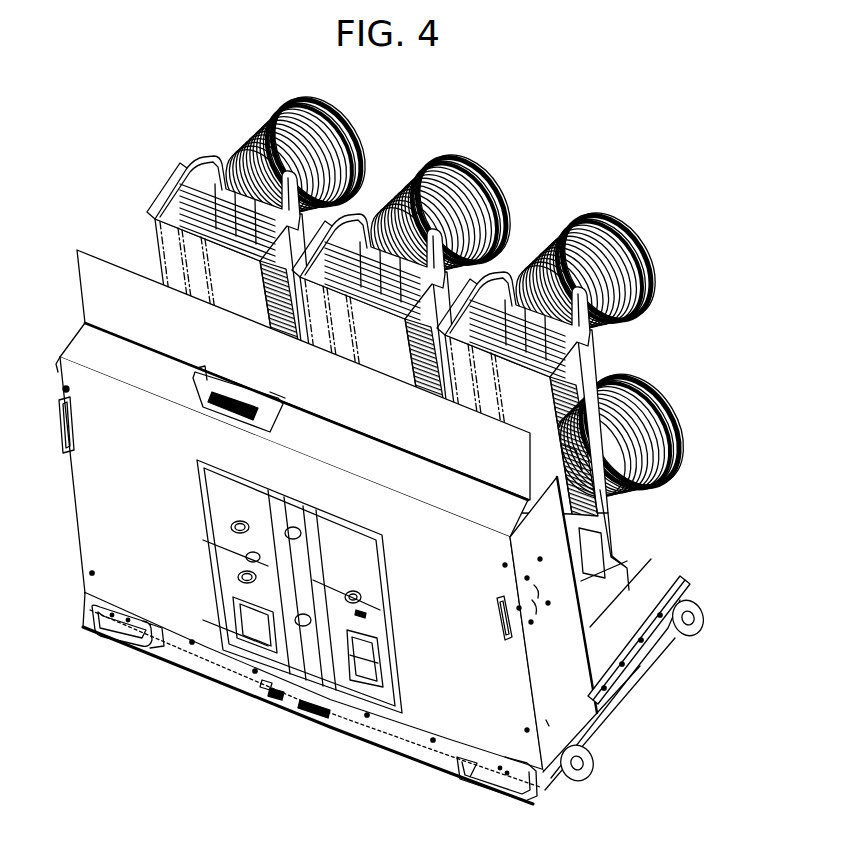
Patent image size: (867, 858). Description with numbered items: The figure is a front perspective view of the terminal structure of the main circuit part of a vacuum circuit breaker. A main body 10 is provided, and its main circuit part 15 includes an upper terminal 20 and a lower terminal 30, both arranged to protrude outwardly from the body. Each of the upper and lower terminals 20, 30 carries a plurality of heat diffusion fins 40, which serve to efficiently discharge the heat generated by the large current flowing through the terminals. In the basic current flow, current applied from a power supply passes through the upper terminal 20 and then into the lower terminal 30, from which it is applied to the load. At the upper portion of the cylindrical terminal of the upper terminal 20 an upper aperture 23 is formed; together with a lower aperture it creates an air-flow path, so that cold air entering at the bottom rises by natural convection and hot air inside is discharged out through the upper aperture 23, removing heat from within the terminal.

The main body 10 is at (490, 663).
The main circuit part 15 is at (591, 518).
The upper terminal 20 is at (637, 233).
The upper aperture 23 is at (582, 217).
The lower terminal 30 is at (677, 398).
The heat diffusion fins 40 is at (607, 340).